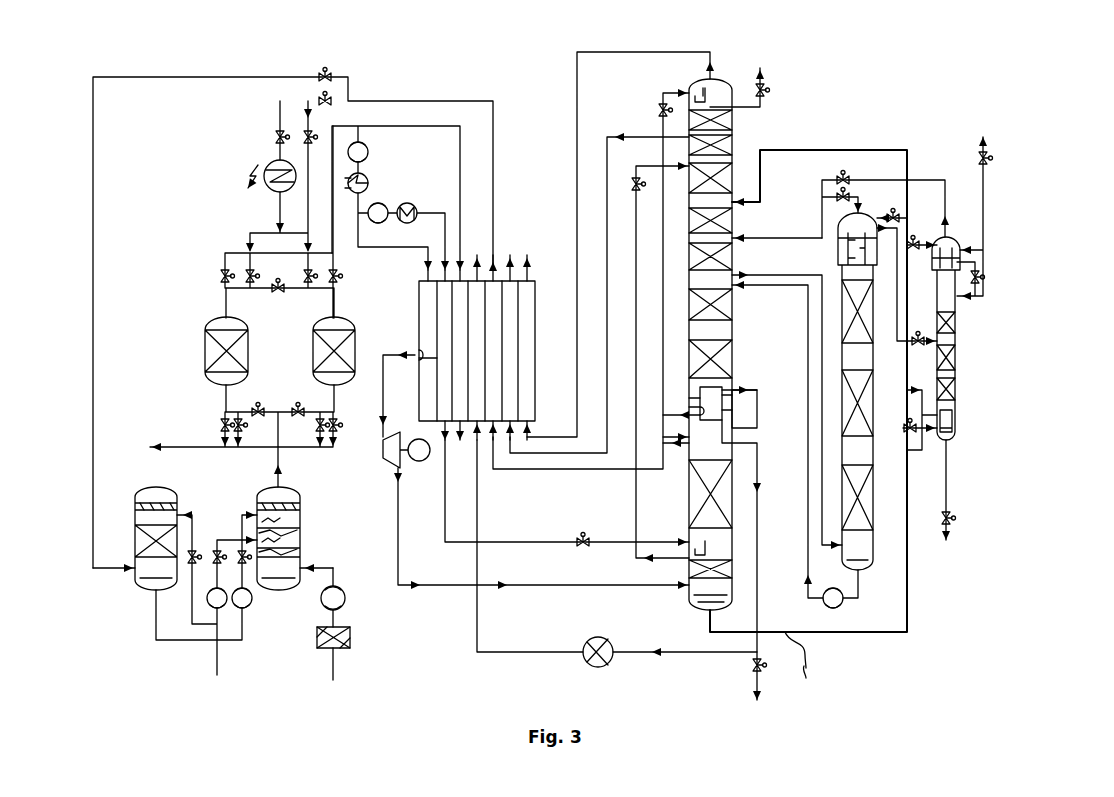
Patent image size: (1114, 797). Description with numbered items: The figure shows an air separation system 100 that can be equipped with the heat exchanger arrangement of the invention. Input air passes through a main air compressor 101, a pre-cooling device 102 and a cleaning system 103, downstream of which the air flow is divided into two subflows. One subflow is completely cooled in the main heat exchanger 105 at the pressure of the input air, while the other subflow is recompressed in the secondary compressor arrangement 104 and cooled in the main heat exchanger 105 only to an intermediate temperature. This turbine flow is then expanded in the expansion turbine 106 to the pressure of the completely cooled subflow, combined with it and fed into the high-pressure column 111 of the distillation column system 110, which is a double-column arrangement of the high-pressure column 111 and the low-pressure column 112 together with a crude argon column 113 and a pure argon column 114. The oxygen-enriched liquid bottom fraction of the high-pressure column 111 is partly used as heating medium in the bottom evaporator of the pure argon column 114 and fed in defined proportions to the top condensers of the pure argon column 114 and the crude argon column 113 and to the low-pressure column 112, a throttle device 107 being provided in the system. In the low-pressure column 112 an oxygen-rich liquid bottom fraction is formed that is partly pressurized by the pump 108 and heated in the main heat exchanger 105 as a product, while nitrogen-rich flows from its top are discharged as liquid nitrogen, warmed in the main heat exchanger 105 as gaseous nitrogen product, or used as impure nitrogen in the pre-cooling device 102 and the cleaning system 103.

The air separation system 100 is at (960, 73).
The main air compressor 101 is at (345, 603).
The pre-cooling device 102 is at (310, 523).
The cleaning system 103 is at (193, 352).
The secondary compressor arrangement 104 is at (386, 182).
The main heat exchanger 105 is at (419, 332).
The expansion turbine 106 is at (383, 452).
The throttle device 107 is at (580, 539).
The pump 108 is at (590, 641).
The distillation column system 110 is at (996, 383).
The high-pressure column 111 is at (688, 482).
The low-pressure column 112 is at (735, 143).
The crude argon column 113 is at (877, 547).
The pure argon column 114 is at (955, 372).